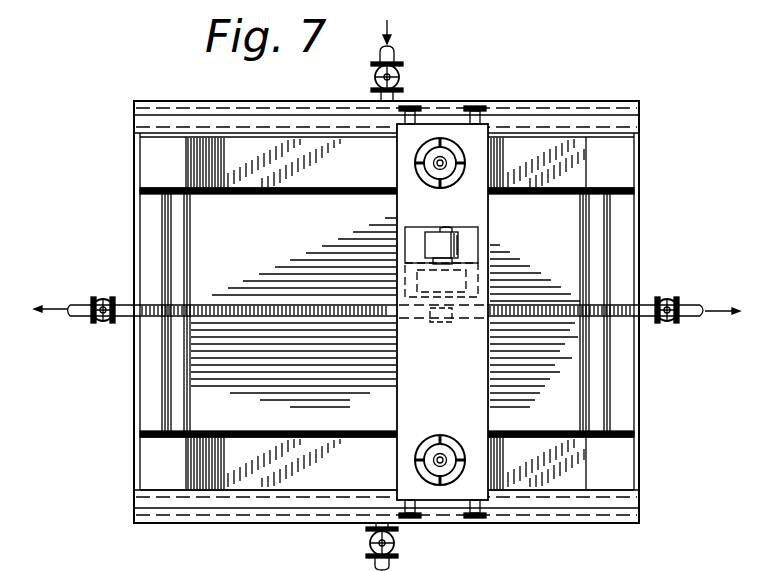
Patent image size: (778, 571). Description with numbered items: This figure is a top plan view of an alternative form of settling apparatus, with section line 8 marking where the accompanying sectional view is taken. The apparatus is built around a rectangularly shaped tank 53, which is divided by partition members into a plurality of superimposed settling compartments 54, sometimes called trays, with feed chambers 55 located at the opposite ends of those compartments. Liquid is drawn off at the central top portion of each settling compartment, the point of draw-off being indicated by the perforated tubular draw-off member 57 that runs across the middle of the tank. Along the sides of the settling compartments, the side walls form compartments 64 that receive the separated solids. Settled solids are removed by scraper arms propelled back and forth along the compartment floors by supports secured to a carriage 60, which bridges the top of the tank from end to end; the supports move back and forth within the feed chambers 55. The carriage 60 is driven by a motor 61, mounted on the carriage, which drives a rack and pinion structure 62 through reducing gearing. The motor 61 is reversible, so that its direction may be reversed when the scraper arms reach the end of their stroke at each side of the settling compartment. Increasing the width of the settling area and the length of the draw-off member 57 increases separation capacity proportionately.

The section line 8-8 with valves 8 is at (455, 76).
The rectangularly shaped tank 53 is at (640, 167).
The settling compartment 54 is at (547, 243).
The feed chamber 55 is at (553, 147).
The perforated tubular draw-off member 57 is at (258, 302).
The carriage 60 is at (477, 395).
The motor 61 is at (470, 221).
The rack and pinion structure 62 is at (297, 304).
The compartment receiving the separated solids 64 is at (148, 358).